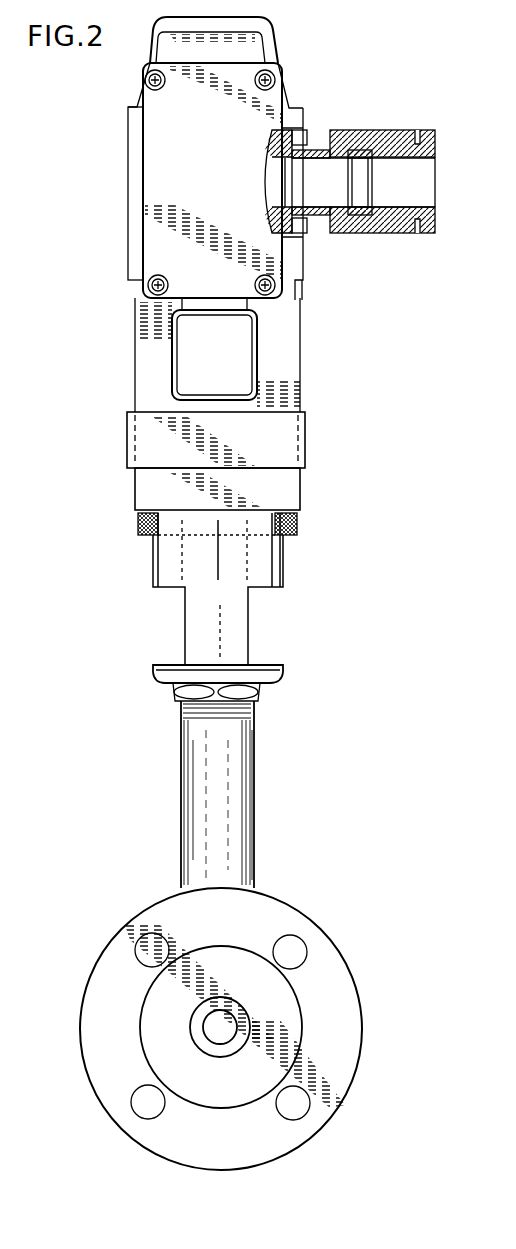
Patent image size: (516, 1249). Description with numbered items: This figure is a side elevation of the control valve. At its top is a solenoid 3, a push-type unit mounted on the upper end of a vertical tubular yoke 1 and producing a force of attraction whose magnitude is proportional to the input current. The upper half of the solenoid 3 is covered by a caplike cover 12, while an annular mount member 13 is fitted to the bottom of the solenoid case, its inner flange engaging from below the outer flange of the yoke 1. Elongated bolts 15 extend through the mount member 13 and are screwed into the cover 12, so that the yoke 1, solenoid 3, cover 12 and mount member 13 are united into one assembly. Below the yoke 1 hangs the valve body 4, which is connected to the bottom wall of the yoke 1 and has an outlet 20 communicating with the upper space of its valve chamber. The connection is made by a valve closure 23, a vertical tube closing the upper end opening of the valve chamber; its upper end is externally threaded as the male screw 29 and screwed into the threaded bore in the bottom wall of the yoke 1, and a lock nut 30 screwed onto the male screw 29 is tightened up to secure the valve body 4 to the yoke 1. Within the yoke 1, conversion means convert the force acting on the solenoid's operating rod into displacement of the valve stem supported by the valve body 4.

The yoke 1 is at (148, 587).
The solenoid 3 is at (150, 368).
The valve body 4 is at (107, 928).
The cover 12 is at (157, 27).
The mount member 13 is at (145, 493).
The bolts 15 is at (138, 527).
The outlet 20 is at (257, 1017).
The valve closure 23 is at (255, 818).
The male screw 29 is at (258, 710).
The lock nut 30 is at (257, 693).